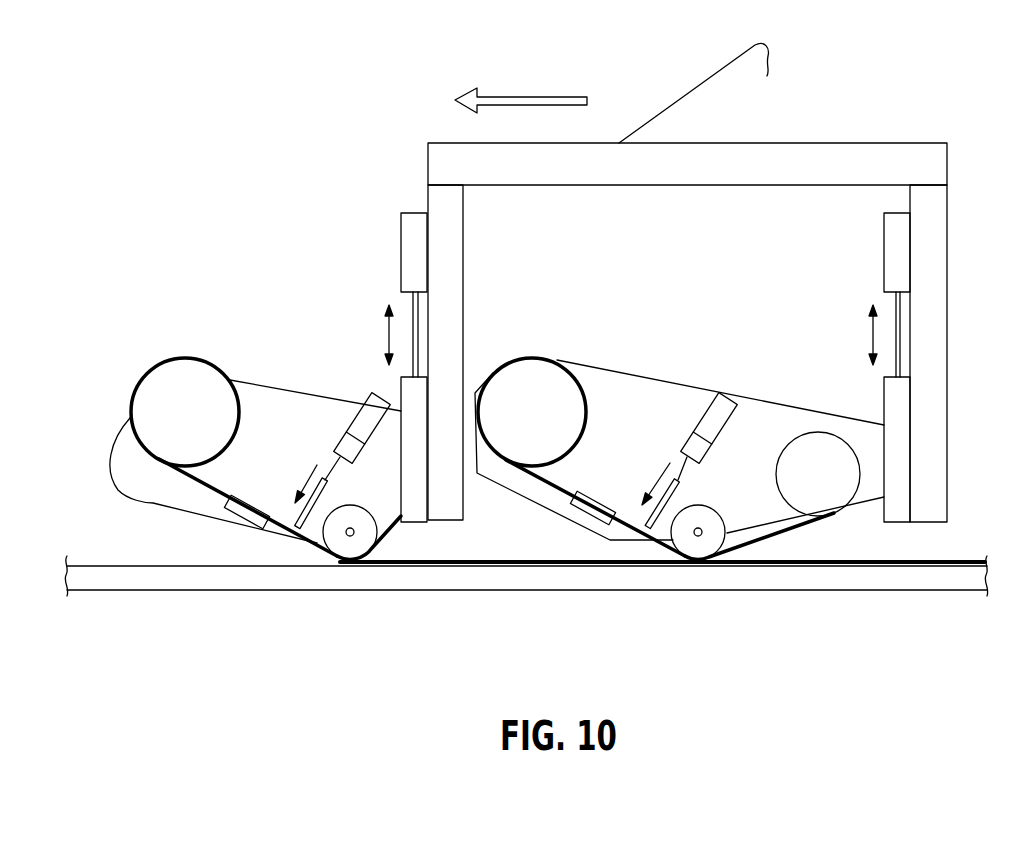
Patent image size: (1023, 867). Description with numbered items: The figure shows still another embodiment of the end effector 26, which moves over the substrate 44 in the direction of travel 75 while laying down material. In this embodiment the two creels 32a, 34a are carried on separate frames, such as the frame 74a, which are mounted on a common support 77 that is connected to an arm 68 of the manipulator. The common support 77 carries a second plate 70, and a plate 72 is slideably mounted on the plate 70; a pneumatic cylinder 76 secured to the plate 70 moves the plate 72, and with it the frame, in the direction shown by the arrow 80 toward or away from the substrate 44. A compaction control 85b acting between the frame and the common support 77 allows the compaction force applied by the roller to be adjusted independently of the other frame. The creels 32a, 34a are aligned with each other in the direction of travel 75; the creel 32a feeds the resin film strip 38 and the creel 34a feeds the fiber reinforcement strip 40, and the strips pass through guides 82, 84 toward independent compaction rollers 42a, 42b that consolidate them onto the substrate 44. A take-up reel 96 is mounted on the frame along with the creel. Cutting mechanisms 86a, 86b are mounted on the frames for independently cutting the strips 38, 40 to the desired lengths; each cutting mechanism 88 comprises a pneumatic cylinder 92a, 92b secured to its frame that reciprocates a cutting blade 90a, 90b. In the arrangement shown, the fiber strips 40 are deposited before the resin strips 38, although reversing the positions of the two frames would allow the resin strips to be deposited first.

The end effector 26 is at (387, 138).
The direction of travel 75 is at (530, 96).
The arm 68 is at (700, 112).
The common support 77 is at (865, 165).
The second plate 70 is at (927, 210).
The pneumatic cylinder 76 is at (415, 240).
The plate 72 is at (895, 493).
The arrow 80 is at (386, 335).
The compaction control 85b is at (346, 267).
The substrate 44 is at (152, 573).
The creel 34a is at (177, 390).
The cutting mechanism 88 is at (322, 431).
The fiber reinforcement strip 40 is at (200, 505).
The compaction roller 42b is at (345, 548).
The guide 82 is at (247, 505).
The guide 84 is at (257, 490).
The pneumatic cylinder 92b is at (358, 432).
The cutting blade 90b is at (300, 530).
The cutting mechanism 86b is at (335, 401).
The creel 32a is at (553, 390).
The frame 74a is at (762, 430).
The resin film strip 38 is at (552, 497).
The compaction roller 42a is at (706, 548).
The take-up reel 96 is at (828, 500).
The pneumatic cylinder 92a is at (713, 412).
The cutting blade 90a is at (658, 533).
The cutting mechanism 86a is at (687, 411).